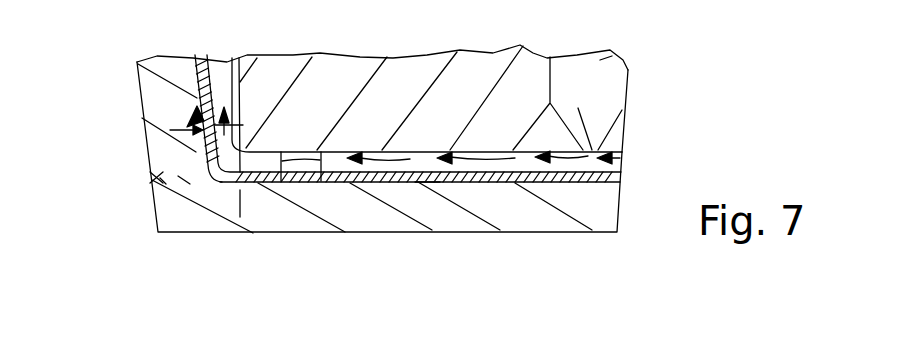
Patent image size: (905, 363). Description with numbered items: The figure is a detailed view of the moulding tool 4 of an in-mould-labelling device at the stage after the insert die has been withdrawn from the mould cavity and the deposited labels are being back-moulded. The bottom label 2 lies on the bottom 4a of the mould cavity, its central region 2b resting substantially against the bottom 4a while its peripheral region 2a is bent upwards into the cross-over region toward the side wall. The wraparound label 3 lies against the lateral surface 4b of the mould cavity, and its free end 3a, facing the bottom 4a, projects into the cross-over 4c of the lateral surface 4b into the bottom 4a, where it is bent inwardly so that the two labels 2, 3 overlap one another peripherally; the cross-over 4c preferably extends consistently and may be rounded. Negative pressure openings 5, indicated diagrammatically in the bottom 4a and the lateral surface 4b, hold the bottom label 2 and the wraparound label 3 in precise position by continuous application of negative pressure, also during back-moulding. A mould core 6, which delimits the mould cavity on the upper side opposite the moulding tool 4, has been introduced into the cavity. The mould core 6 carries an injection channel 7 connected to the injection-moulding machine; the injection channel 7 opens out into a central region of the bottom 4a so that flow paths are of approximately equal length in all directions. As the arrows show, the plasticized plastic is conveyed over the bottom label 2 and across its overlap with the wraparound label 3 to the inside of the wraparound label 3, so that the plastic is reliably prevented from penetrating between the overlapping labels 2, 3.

The bottom label 2 is at (505, 181).
The peripheral region of the bottom label 2a is at (200, 182).
The central region of the bottom label 2b is at (424, 183).
The wraparound label 3 is at (192, 111).
The free end of the wraparound label 3a is at (183, 180).
The moulding tool 4 is at (150, 172).
The bottom of the mould cavity 4a is at (320, 182).
The lateral surface of the mould cavity 4b is at (197, 76).
The cross-over of the lateral surface into the bottom 4c is at (162, 180).
The negative pressure openings 5 is at (172, 131).
The mould core 6 is at (474, 67).
The injection channel 7 is at (597, 84).